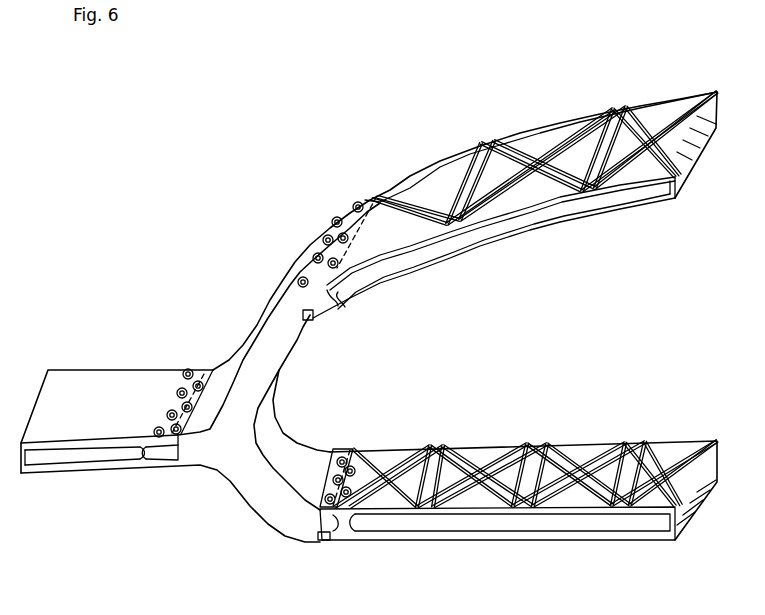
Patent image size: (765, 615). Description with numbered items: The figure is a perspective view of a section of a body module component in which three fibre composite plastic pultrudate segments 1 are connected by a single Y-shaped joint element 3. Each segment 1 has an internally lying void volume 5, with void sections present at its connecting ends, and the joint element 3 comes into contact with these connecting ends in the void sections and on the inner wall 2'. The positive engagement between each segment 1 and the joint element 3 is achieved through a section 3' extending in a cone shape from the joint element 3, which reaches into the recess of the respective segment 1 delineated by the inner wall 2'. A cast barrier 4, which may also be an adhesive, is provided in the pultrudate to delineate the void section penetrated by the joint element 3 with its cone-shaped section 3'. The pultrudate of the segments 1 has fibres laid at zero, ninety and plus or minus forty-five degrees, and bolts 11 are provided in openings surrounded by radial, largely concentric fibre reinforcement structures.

The body module segment 1 is at (101, 366).
The inner wall 2' is at (238, 449).
The joint element 3 is at (369, 317).
The cone-shaped section 3' is at (491, 191).
The cast barrier 4 is at (143, 457).
The void volume 5 is at (93, 457).
The bolt 11 is at (336, 218).